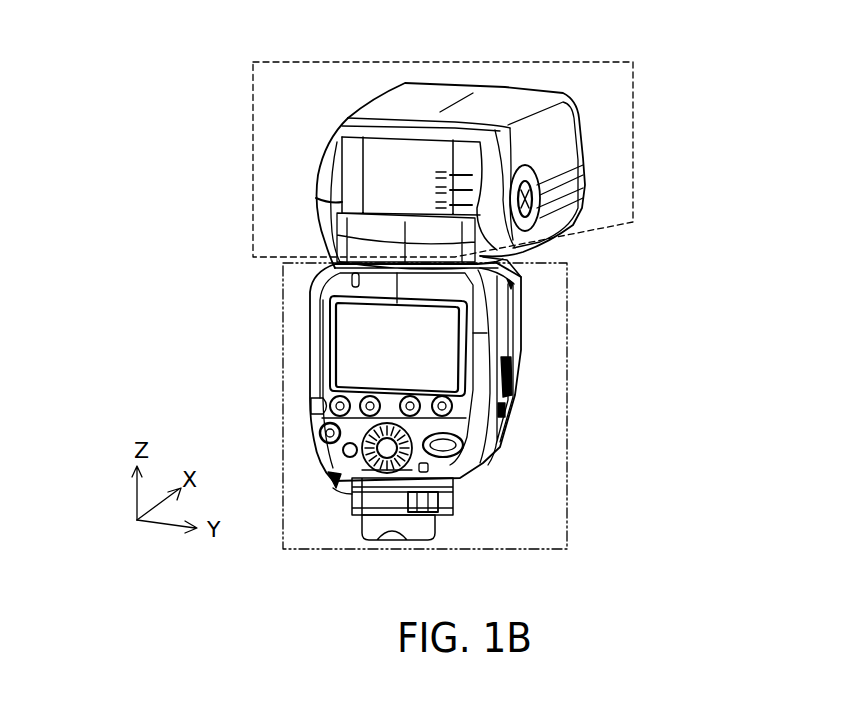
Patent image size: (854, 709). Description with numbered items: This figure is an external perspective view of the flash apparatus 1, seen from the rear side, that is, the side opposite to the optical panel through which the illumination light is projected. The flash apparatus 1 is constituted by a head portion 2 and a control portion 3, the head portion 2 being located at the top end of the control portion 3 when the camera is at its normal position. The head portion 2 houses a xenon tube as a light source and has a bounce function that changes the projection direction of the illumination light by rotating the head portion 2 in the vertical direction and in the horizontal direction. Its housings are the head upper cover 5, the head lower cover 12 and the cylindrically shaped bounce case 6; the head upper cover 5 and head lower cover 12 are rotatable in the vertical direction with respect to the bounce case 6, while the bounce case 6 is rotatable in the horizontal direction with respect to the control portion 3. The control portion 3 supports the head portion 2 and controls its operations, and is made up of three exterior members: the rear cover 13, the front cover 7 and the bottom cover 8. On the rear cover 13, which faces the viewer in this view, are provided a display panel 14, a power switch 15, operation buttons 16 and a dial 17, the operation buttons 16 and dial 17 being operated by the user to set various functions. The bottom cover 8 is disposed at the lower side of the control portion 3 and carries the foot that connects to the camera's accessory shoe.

The flash apparatus 1 is at (133, 58).
The head portion 2 is at (633, 143).
The control portion 3 is at (567, 385).
The head upper cover 5 is at (562, 140).
The bounce case 6 is at (342, 177).
The front cover 7 is at (528, 263).
The bottom cover 8 is at (450, 493).
The head lower cover 12 is at (555, 200).
The rear cover 13 is at (320, 332).
The display panel 14 is at (340, 357).
The power switch 15 is at (447, 437).
The operation buttons 16 is at (313, 433).
The dial 17 is at (338, 487).